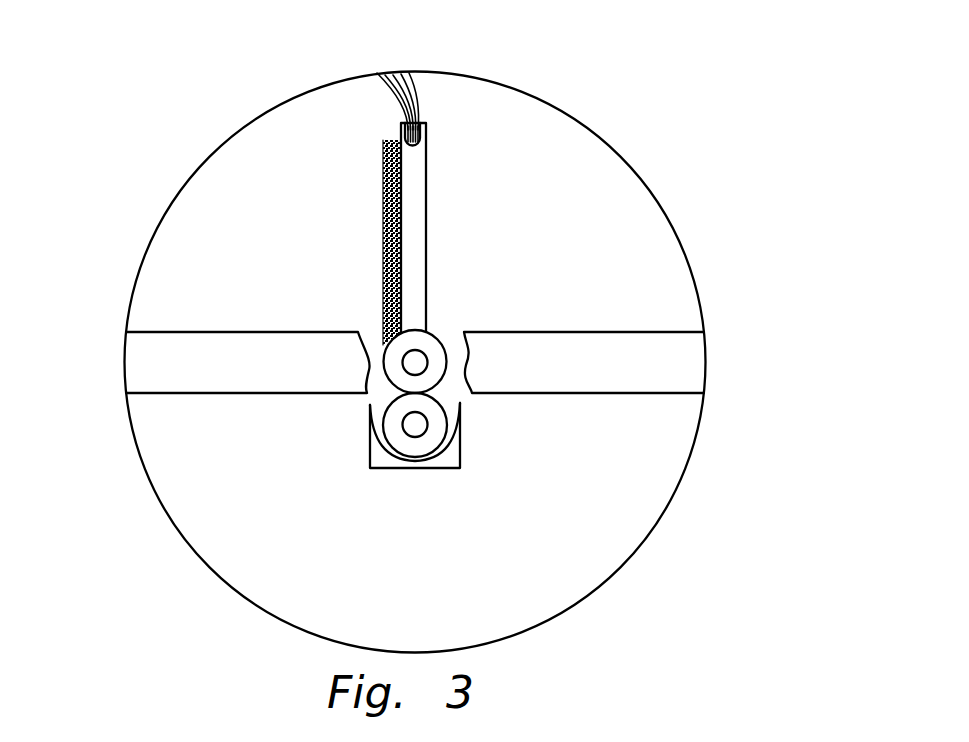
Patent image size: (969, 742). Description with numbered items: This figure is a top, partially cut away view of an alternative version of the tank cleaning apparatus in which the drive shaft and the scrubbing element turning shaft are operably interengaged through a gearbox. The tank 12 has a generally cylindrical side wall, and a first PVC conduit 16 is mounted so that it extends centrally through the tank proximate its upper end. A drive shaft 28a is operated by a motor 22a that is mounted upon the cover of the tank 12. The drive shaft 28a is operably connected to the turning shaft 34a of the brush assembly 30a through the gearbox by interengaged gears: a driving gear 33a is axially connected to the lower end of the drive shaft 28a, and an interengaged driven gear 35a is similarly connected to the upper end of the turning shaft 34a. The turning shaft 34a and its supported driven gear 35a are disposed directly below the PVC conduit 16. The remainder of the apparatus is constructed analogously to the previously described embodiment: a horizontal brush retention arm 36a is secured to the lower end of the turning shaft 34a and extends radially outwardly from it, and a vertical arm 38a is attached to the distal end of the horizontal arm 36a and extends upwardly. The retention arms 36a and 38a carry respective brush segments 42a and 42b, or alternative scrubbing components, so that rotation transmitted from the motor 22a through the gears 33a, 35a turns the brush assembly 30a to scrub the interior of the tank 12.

The tank 12 is at (183, 545).
The first PVC conduit 16 is at (220, 394).
The motor 22a is at (460, 460).
The drive shaft 28a is at (426, 428).
The brush assembly 30a is at (428, 232).
The driving gear 33a is at (385, 418).
The turning shaft 34a is at (422, 352).
The driven gear 35a is at (390, 345).
The horizontal brush retention arm 36a is at (427, 172).
The vertical arm 38a is at (427, 133).
The brush segment 42a is at (385, 173).
The brush segment 42b is at (417, 88).